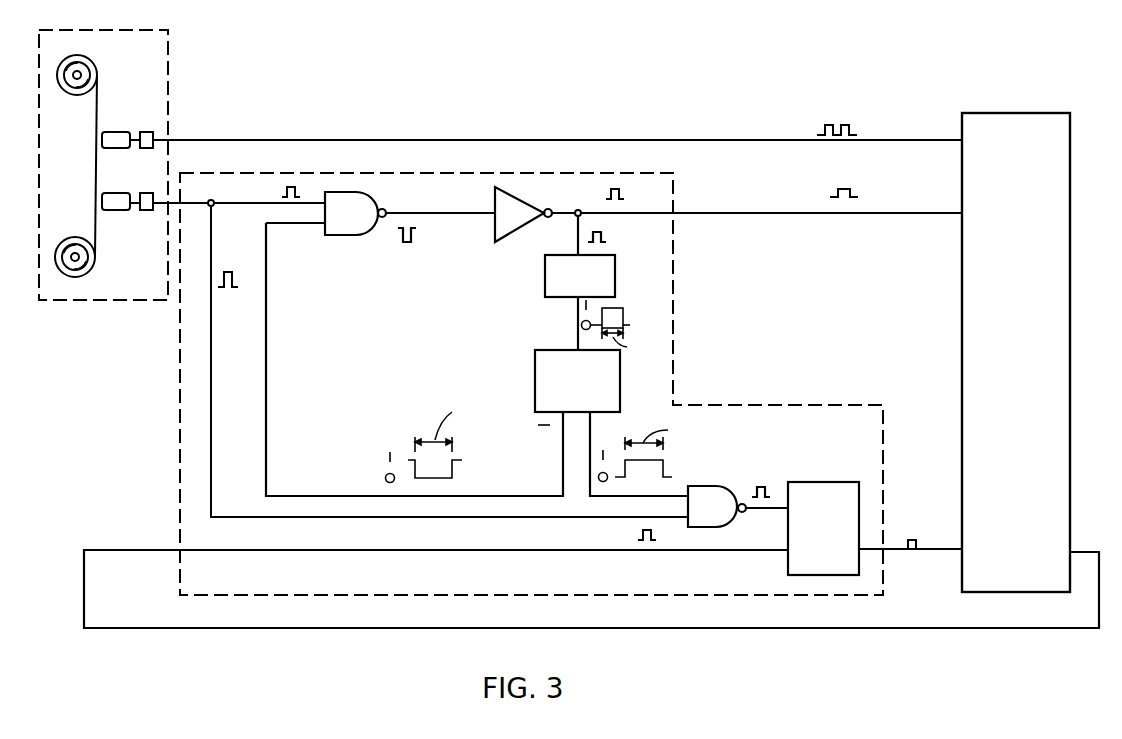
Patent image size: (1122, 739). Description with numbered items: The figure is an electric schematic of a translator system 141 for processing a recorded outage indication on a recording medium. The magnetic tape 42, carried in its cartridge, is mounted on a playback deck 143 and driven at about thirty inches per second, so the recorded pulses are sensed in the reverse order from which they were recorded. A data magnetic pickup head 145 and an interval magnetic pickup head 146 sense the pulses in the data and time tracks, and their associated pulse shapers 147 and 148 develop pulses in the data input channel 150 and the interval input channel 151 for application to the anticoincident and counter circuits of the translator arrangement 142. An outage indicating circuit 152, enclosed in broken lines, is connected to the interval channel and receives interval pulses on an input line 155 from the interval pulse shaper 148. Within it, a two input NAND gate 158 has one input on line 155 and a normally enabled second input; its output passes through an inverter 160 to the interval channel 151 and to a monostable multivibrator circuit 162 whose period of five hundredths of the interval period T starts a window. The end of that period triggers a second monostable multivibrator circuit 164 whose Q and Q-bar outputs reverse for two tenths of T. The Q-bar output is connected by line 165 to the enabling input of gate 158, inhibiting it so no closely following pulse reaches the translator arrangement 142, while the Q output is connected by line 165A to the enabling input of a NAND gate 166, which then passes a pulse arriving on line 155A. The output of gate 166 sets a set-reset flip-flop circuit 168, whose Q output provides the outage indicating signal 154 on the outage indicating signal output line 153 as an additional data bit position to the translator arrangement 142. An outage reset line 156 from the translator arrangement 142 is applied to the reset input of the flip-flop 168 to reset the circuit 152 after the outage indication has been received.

The magnetic tape 42 is at (97, 160).
The translator system 141 is at (572, 72).
The translator arrangement 142 is at (1027, 424).
The playback deck 143 is at (170, 52).
The data magnetic pickup head 145 is at (117, 132).
The interval magnetic pickup head 146 is at (117, 193).
The pulse shaper 147 is at (147, 132).
The interval pulse shaper 148 is at (145, 212).
The data input channel 150 is at (306, 140).
The interval input channel 151 is at (817, 213).
The outage indicating circuit 152 is at (673, 367).
The outage indicating signal output line 153 is at (943, 549).
The outage indicating signal 154 is at (917, 533).
The input line 155 is at (245, 203).
The line 155A is at (208, 402).
The outage reset line 156 is at (143, 551).
The two input NAND gate 158 is at (366, 223).
The inverter 160 is at (493, 203).
The monostable multivibrator circuit 162 is at (594, 287).
The second monostable multivibrator circuit 164 is at (594, 389).
The line 165 is at (332, 496).
The line 165A is at (590, 468).
The NAND gate 166 is at (728, 518).
The set-reset flip-flop circuit 168 is at (823, 482).